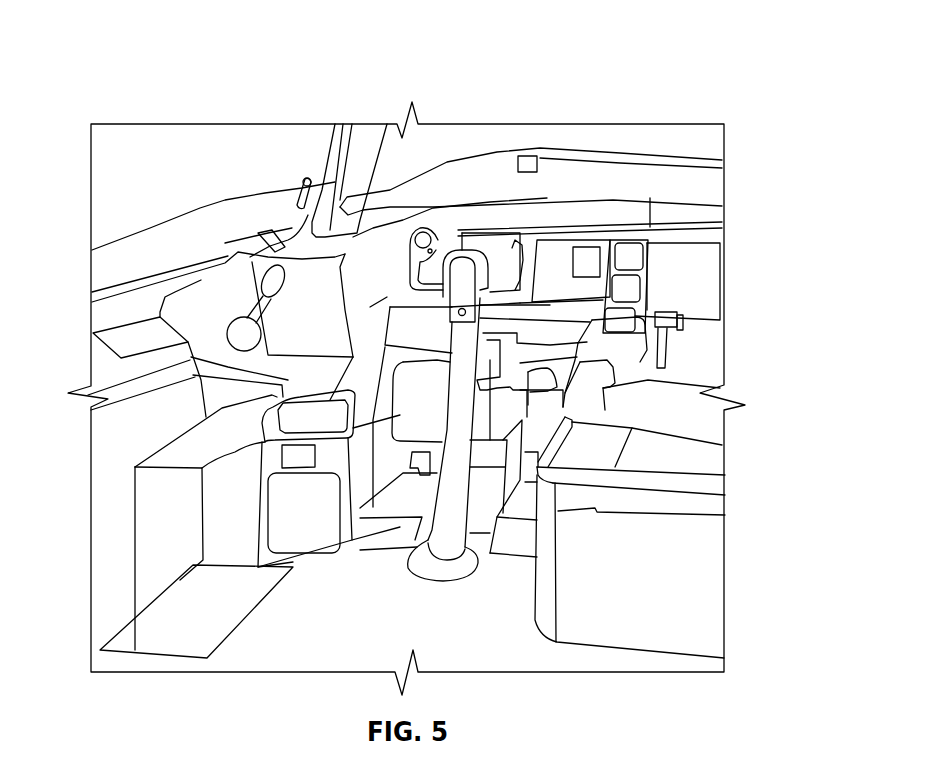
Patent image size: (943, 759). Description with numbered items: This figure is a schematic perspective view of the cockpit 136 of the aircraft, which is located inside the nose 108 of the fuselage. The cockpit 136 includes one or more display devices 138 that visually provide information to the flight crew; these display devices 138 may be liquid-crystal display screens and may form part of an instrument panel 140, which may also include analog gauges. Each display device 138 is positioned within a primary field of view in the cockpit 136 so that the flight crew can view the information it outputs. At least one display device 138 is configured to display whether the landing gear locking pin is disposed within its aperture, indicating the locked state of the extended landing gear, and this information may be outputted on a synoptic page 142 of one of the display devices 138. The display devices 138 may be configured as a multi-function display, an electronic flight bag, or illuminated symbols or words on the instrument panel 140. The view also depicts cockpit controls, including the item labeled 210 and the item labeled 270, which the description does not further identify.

The cockpit 136 is at (720, 38).
The nose 108 is at (340, 137).
The joystick control 210 is at (285, 262).
The center control stick 270 is at (489, 250).
The display device 138 is at (592, 240).
The synoptic page 142 is at (588, 243).
The instrument panel 140 is at (655, 250).